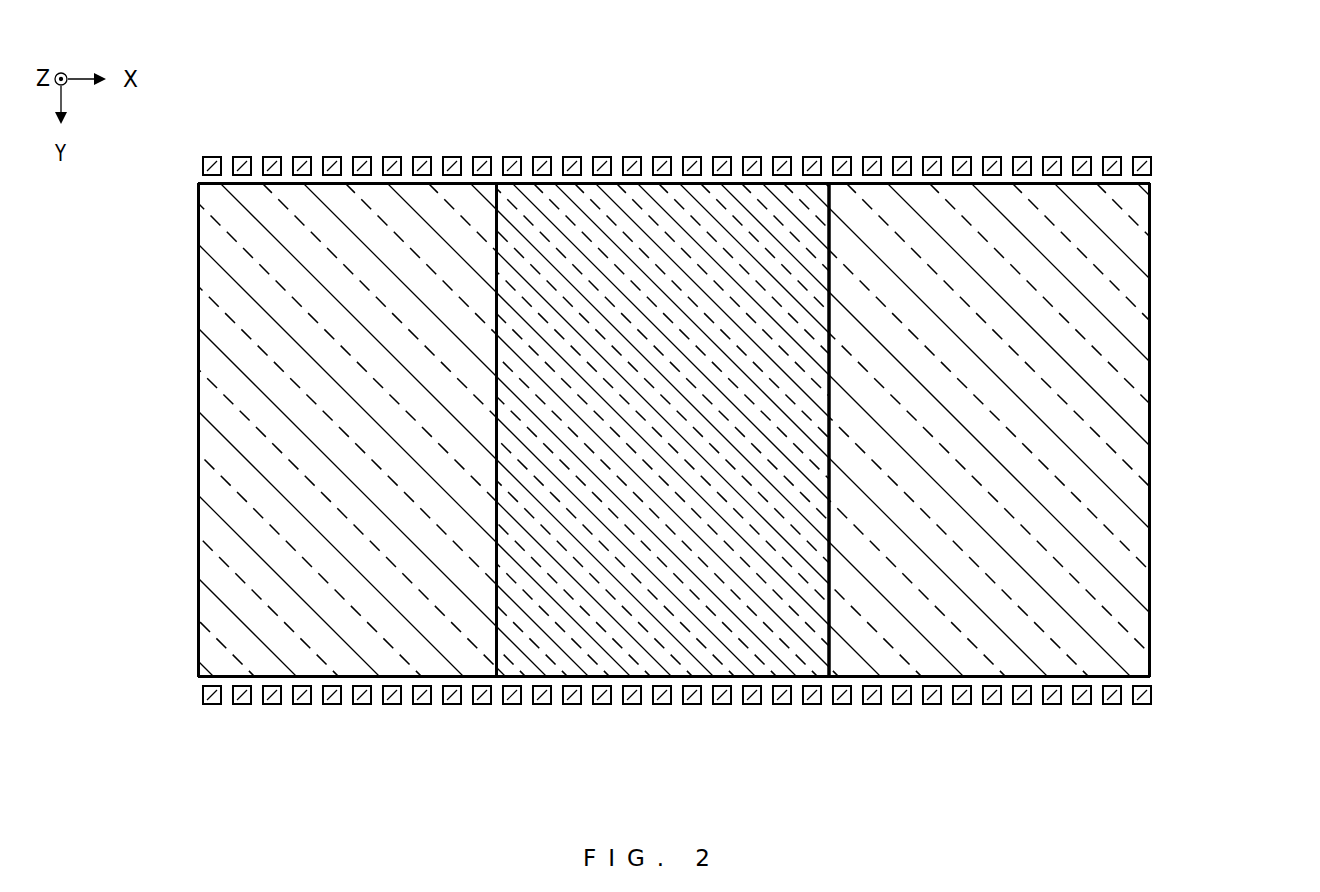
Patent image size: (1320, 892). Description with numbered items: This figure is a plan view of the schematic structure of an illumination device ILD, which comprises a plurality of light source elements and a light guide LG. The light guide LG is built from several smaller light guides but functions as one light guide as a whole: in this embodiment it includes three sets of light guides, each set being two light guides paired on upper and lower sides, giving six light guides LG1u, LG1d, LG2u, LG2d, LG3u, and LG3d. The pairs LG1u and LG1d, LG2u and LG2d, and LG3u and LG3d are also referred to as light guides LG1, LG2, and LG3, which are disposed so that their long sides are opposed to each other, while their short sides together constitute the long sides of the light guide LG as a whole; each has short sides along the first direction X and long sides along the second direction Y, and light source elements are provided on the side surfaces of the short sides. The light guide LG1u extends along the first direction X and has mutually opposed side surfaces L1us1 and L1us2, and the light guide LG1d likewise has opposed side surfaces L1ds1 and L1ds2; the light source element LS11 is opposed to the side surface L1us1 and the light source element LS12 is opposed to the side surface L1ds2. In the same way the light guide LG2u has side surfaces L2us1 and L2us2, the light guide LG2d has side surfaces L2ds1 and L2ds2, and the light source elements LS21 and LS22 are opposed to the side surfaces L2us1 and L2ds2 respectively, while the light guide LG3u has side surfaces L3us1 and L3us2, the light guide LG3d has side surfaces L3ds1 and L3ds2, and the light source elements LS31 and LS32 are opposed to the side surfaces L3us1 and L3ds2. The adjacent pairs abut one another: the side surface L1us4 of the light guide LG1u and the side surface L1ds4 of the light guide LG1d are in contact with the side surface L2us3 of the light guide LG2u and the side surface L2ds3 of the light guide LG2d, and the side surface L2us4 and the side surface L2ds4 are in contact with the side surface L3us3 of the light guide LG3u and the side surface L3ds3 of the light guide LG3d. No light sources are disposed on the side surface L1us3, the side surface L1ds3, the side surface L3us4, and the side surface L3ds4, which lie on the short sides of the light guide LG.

The illumination device ILD is at (1195, 68).
The light guide LG is at (1212, 266).
The light guide pair LG1 is at (215, 400).
The light guide LG1u is at (482, 434).
The light guide LG1d is at (482, 434).
The light guide pair LG2 is at (800, 663).
The light guide LG2u is at (665, 444).
The light guide LG2d is at (665, 444).
The light guide pair LG3 is at (1130, 383).
The light guide LG3u is at (832, 434).
The light guide LG3d is at (832, 434).
The light source element LS11 is at (302, 157).
The light source element LS12 is at (362, 704).
The light source element LS21 is at (572, 157).
The light source element LS22 is at (662, 704).
The light source element LS31 is at (1083, 157).
The light source element LS32 is at (1052, 704).
The side surface L1us1 is at (347, 130).
The side surface L1ds1 is at (437, 183).
The side surface L1us2 is at (347, 735).
The side surface L1ds2 is at (253, 679).
The side surface L1us3 is at (148, 430).
The side surface L1ds3 is at (198, 281).
The side surface L1us4 is at (445, 430).
The side surface L1ds4 is at (497, 318).
The side surface L2us1 is at (663, 130).
The side surface L2ds1 is at (766, 183).
The side surface L2us2 is at (663, 735).
The side surface L2ds2 is at (553, 679).
The side surface L2us3 is at (549, 430).
The side surface L2ds3 is at (497, 492).
The side surface L2us4 is at (777, 430).
The side surface L2ds4 is at (829, 318).
The side surface L3us1 is at (989, 130).
The side surface L3ds1 is at (947, 183).
The side surface L3us2 is at (989, 735).
The side surface L3ds2 is at (947, 679).
The side surface L3us3 is at (881, 430).
The side surface L3ds3 is at (829, 492).
The side surface L3us4 is at (1202, 430).
The side surface L3ds4 is at (1150, 481).